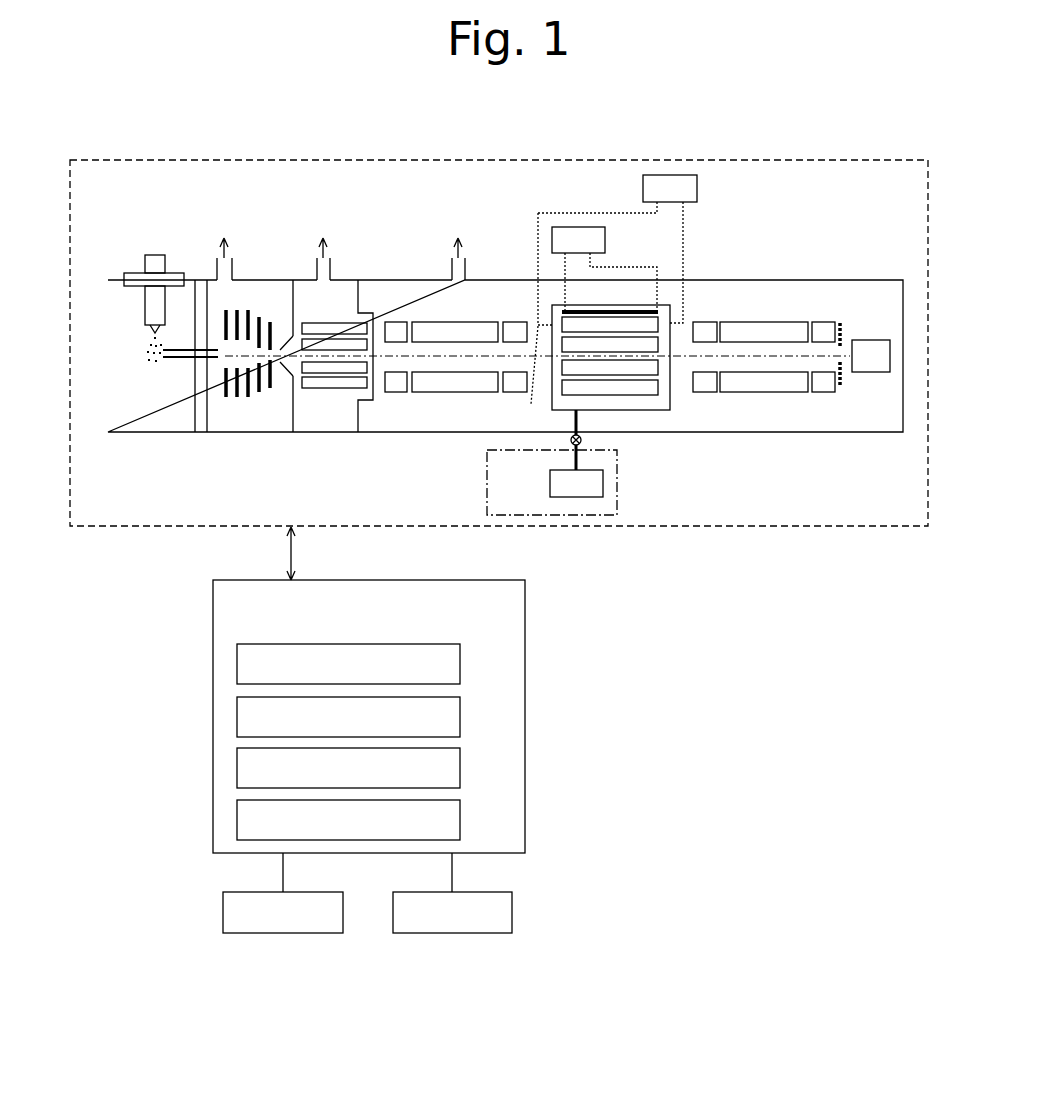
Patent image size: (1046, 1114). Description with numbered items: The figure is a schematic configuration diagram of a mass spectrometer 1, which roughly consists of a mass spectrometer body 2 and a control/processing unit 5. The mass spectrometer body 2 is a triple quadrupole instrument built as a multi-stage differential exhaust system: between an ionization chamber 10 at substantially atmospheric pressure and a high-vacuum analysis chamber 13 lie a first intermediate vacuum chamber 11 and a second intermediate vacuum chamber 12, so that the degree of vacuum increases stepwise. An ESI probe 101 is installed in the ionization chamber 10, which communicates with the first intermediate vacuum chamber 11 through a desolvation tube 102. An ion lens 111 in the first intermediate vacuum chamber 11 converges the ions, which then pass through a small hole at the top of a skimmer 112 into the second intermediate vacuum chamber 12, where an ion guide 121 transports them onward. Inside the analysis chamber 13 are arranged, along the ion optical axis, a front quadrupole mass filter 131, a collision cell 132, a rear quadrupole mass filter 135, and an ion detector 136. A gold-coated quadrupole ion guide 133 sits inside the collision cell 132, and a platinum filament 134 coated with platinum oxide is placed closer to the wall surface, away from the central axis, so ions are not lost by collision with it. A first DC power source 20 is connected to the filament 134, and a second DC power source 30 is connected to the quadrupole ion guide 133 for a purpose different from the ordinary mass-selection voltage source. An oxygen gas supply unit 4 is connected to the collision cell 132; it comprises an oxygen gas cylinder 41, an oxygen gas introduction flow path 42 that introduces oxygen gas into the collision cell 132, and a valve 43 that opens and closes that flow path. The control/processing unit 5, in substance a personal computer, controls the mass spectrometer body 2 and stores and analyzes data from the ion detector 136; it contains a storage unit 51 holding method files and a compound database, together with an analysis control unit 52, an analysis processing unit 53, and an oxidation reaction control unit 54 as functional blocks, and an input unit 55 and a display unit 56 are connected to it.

The mass spectrometer 1 is at (861, 103).
The mass spectrometer body 2 is at (742, 158).
The oxygen gas supply unit 4 is at (618, 487).
The control/processing unit 5 is at (528, 617).
The ionization chamber 10 is at (140, 421).
The first intermediate vacuum chamber 11 is at (219, 423).
The second intermediate vacuum chamber 12 is at (307, 422).
The analysis chamber 13 is at (428, 423).
The first DC power source 20 is at (607, 243).
The second DC power source 30 is at (698, 190).
The oxygen gas cylinder 41 is at (550, 483).
The oxygen gas introduction flow path 42 is at (573, 455).
The valve 43 is at (582, 440).
The storage unit 51 is at (462, 672).
The analysis control unit 52 is at (462, 722).
The analysis processing unit 53 is at (462, 773).
The oxidation reaction control unit 54 is at (462, 825).
The input unit 55 is at (316, 935).
The display unit 56 is at (486, 935).
The ESI probe 101 is at (147, 257).
The desolvation tube 102 is at (180, 360).
The ion lens 111 is at (257, 310).
The skimmer 112 is at (287, 370).
The ion guide 121 is at (340, 322).
The front quadrupole mass filter 131 is at (435, 318).
The collision cell 132 is at (667, 412).
The quadrupole ion guide 133 is at (658, 390).
The filament 134 is at (596, 308).
The rear quadrupole mass filter 135 is at (758, 320).
The ion detector 136 is at (872, 338).